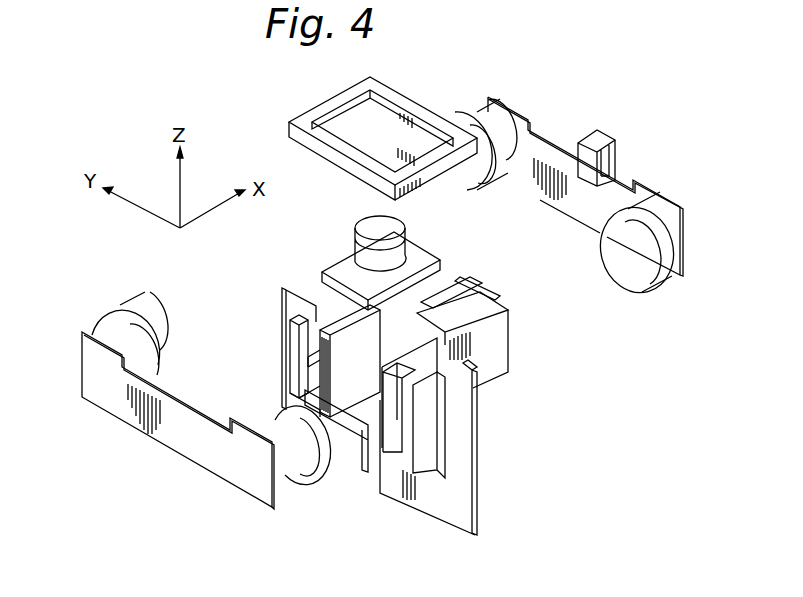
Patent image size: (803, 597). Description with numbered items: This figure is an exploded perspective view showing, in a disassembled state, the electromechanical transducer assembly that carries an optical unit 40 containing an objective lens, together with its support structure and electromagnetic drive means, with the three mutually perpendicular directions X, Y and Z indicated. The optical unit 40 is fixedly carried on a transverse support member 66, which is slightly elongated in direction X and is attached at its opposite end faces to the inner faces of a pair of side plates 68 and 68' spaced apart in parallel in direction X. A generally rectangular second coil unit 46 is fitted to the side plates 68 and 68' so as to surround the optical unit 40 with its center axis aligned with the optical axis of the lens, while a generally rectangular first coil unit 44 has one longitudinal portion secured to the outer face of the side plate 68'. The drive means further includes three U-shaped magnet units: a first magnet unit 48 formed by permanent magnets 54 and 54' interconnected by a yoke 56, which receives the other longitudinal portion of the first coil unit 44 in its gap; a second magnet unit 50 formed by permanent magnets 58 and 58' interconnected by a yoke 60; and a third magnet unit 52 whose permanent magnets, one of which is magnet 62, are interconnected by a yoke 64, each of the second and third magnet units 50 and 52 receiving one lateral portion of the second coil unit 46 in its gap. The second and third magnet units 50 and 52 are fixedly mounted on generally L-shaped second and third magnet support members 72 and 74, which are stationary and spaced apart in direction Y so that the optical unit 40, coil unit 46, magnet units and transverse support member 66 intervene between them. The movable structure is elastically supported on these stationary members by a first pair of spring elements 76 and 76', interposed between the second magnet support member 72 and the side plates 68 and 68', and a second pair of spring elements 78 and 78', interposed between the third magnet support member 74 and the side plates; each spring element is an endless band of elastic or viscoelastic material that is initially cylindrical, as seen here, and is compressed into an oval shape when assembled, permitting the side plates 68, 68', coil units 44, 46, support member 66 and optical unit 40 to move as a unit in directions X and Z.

The optical unit 40 is at (403, 218).
The first coil unit 44 is at (604, 132).
The second coil unit 46 is at (398, 144).
The first magnet unit 48 is at (514, 355).
The second magnet unit 50 is at (283, 317).
The third magnet unit 52 is at (452, 445).
The permanent magnet 54 is at (462, 278).
The permanent magnet 54' is at (490, 340).
The yoke 56 is at (488, 293).
The permanent magnet 58 is at (270, 354).
The permanent magnet 58' is at (273, 397).
The yoke 60 is at (300, 376).
The permanent magnet 62 is at (385, 455).
The yoke 64 is at (405, 492).
The transverse support member 66 is at (343, 262).
The side plate 68 is at (178, 420).
The side plate 68' is at (585, 186).
The second magnet support member 72 is at (288, 287).
The third magnet support member 74 is at (478, 500).
The spring element 76 is at (131, 323).
The spring element 76' is at (486, 128).
The spring element 78 is at (303, 472).
The spring element 78' is at (637, 261).